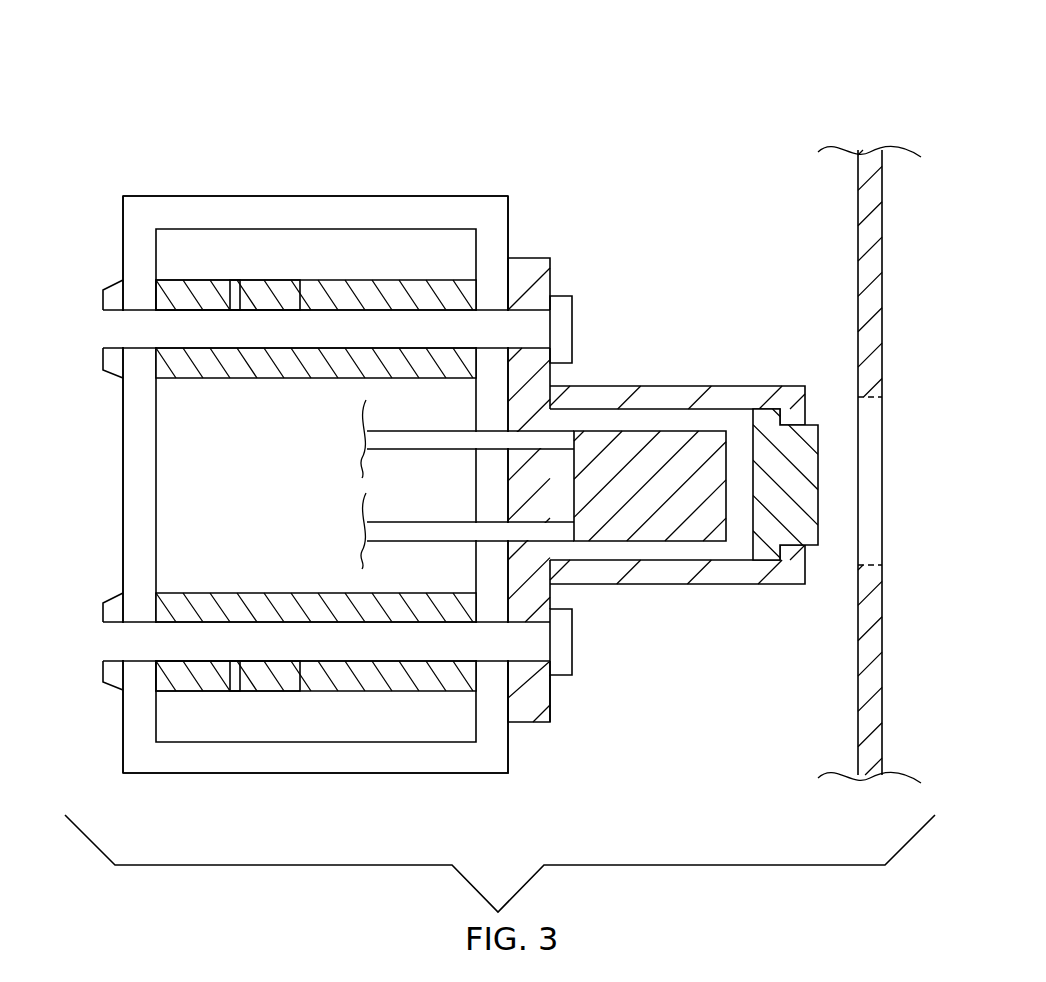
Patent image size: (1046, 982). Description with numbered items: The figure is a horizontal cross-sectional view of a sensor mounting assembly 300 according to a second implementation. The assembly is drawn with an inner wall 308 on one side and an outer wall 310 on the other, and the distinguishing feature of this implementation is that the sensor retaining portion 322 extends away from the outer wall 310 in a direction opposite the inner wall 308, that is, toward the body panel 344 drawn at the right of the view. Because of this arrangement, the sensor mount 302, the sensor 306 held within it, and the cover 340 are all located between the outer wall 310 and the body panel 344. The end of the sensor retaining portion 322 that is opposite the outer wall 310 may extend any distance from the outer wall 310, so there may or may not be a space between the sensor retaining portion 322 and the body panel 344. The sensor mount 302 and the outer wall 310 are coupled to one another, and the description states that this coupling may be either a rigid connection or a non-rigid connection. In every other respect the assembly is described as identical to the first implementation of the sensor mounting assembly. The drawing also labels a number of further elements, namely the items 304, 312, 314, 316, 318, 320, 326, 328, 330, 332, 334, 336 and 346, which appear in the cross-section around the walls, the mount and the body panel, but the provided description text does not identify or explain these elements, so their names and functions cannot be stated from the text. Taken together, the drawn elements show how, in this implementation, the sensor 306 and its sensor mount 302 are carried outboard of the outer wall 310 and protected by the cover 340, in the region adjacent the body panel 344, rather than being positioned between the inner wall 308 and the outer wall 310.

The sensor mounting assembly 300 is at (398, 90).
The sensor mount 302 is at (677, 480).
The housing 304 is at (467, 774).
The sensor 306 is at (623, 542).
The inner wall 308 is at (123, 549).
The outer wall 310 is at (510, 219).
The bearing 312 is at (200, 310).
The lower bracket arm 314 is at (690, 557).
The plug end 316 is at (823, 566).
The upper arm 318 is at (485, 431).
The lower arm 320 is at (432, 452).
The sensor retaining portion 322 is at (695, 386).
The bottom housing wall 326 is at (527, 723).
The seal 328 is at (238, 300).
The flange 330 is at (573, 296).
The rod 332 is at (103, 331).
The bushing 334 is at (285, 280).
The rod end 336 is at (103, 290).
The cover 340 is at (802, 487).
The body panel 344 is at (883, 207).
The wall opening 346 is at (883, 421).